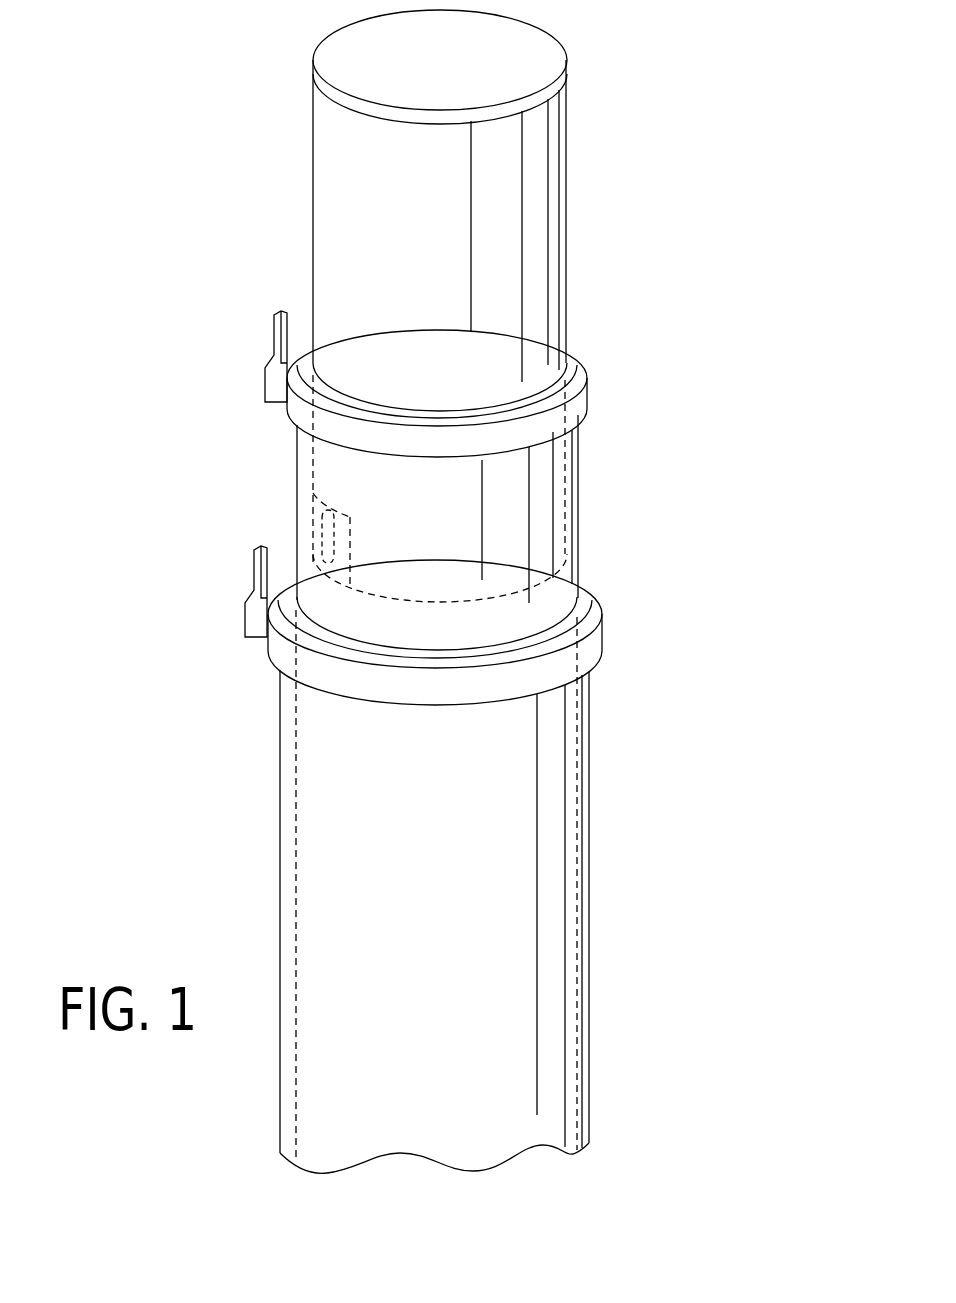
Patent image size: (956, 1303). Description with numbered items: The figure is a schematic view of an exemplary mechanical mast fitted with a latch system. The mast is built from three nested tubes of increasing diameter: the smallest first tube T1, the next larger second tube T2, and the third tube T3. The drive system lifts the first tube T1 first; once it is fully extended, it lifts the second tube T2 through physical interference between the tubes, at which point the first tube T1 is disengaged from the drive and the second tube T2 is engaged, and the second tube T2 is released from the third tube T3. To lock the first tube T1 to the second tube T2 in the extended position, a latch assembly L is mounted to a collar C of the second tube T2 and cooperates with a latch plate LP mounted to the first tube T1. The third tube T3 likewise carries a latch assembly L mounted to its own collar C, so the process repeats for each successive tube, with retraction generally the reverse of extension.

The first tube T1 is at (330, 172).
The second tube T2 is at (318, 457).
The third tube T3 is at (307, 845).
The collar C is at (578, 400).
The latch assembly L is at (273, 383).
The latch plate LP is at (305, 523).